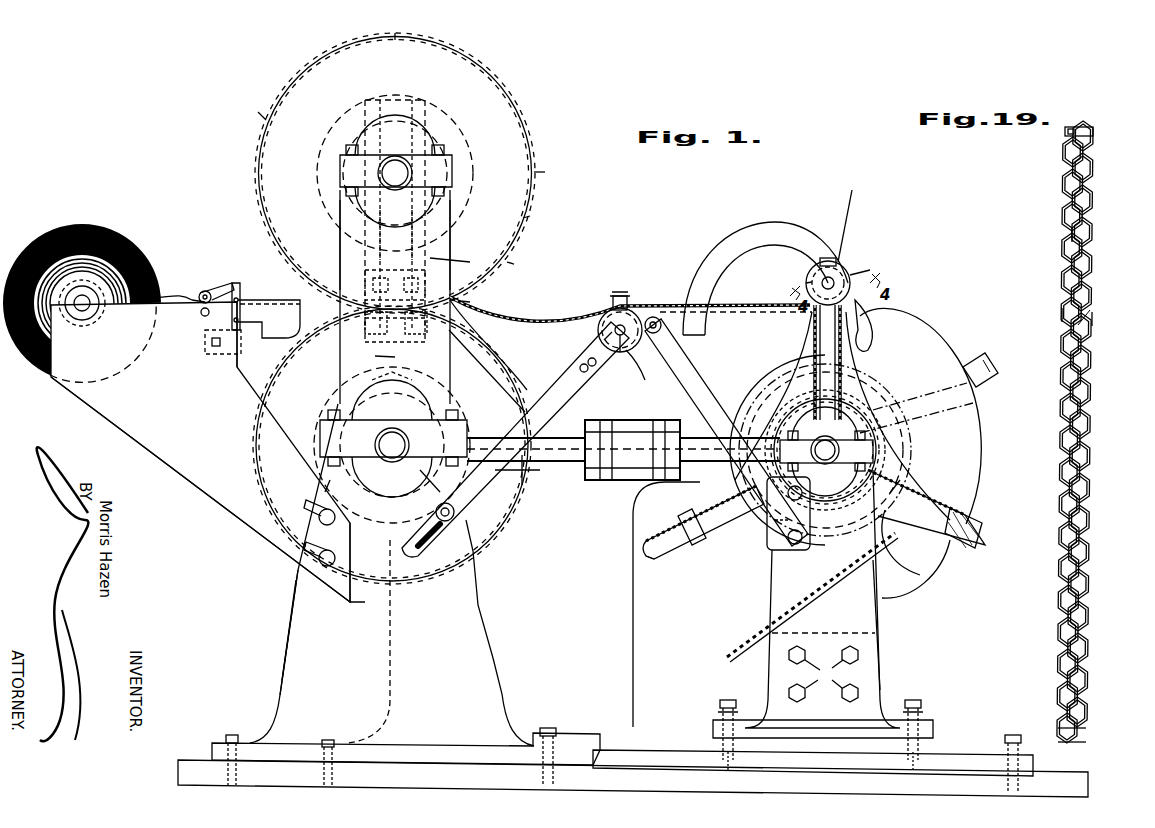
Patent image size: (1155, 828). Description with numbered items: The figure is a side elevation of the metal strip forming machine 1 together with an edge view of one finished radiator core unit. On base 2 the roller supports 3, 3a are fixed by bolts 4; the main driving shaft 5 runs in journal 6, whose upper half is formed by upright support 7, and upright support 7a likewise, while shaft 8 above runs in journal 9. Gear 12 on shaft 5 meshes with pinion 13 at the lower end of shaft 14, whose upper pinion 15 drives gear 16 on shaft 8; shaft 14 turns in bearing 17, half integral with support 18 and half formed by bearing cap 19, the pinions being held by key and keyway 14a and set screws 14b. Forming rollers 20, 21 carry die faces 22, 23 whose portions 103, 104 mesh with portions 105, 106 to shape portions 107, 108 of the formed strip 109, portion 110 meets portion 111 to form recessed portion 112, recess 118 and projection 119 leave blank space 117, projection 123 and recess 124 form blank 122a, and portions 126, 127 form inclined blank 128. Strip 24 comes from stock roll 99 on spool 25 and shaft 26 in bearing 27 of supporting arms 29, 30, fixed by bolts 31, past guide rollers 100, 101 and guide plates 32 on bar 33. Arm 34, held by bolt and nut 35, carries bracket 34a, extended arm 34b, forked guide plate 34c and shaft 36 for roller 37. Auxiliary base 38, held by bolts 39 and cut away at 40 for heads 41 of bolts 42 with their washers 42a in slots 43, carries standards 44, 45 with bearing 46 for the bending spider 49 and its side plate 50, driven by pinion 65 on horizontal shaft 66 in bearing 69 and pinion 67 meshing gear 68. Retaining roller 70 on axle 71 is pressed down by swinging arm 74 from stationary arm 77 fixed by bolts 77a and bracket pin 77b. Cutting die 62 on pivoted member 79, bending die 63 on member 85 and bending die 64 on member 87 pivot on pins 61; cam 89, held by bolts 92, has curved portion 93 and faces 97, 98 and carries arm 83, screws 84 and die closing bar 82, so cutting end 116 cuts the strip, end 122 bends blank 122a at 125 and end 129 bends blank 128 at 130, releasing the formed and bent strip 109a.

In FIG. 1, the metal strip forming machine 1 is at (296, 584).
In FIG. 1, the base 2 is at (633, 778).
In FIG. 1, the roller support 3 is at (392, 423).
In FIG. 1, the roller support 3a is at (290, 636).
In FIG. 1, the bolts 4 is at (232, 735).
In FIG. 1, the main driving shaft 5 is at (392, 445).
In FIG. 1, the journal 6 is at (398, 460).
In FIG. 1, the upright support 7 is at (441, 245).
In FIG. 1, the upright support 7a is at (472, 299).
In FIG. 1, the shaft 8 is at (395, 173).
In FIG. 1, the journal 9 is at (395, 154).
In FIG. 1, the gear 12 is at (392, 510).
In FIG. 1, the pinion 13 is at (392, 380).
In FIG. 1, the shaft 14 is at (353, 245).
In FIG. 1, the key and keyway 14a is at (371, 361).
In FIG. 1, the set screws 14b is at (459, 256).
In FIG. 1, the pinion 15 is at (396, 235).
In FIG. 1, the gear 16 is at (342, 134).
In FIG. 1, the bearing 17 is at (363, 323).
In FIG. 1, the support 18 is at (640, 604).
In FIG. 1, the bearing cap 19 is at (428, 323).
In FIG. 1, the strip forming roller 20 is at (392, 445).
In FIG. 1, the strip forming roller 21 is at (429, 173).
In FIG. 1, the die face 22 is at (492, 530).
In FIG. 1, the die face 23 is at (540, 176).
In FIG. 1, the strip 24 is at (180, 296).
In FIG. 1, the spool 25 is at (80, 296).
In FIG. 1, the shaft 26 is at (95, 312).
In FIG. 1, the bearing 27 is at (76, 316).
In FIG. 1, the supporting arm 29 is at (200, 452).
In FIG. 1, the supporting arm 30 is at (812, 597).
In FIG. 1, the bolts 31 is at (322, 533).
In FIG. 1, the adjustable guide plates 32 is at (269, 319).
In FIG. 1, the bar 33 is at (210, 345).
In FIG. 1, the arm 34 is at (556, 390).
In FIG. 1, the bracket 34a is at (610, 312).
In FIG. 1, the extended arm 34b is at (630, 296).
In FIG. 1, the forked guide plate 34c is at (622, 352).
In FIG. 1, the bolt and nut 35 is at (445, 521).
In FIG. 1, the shaft 36 is at (643, 365).
In FIG. 1, the roller 37 is at (604, 332).
In FIG. 1, the auxiliary base 38 is at (406, 749).
In FIG. 1, the bolts 39 is at (548, 728).
In FIG. 1, the cut away 40 is at (640, 764).
In FIG. 1, the heads 41 is at (878, 760).
In FIG. 1, the bolts 42 is at (824, 718).
In FIG. 1, the washer 42a is at (718, 712).
In FIG. 1, the slots 43 is at (703, 736).
In FIG. 1, the standard 44 is at (822, 599).
In FIG. 1, the standard 45 is at (880, 614).
In FIG. 1, the bearing 46 is at (845, 422).
In FIG. 1, the bending spider 49 is at (901, 495).
In FIG. 1, the side plate 50 is at (860, 450).
In FIG. 1, the pivot pins 61 is at (868, 272).
In FIG. 1, the cutting die 62 is at (690, 554).
In FIG. 1, the bending die 63 is at (988, 536).
In FIG. 1, the bending die 64 is at (820, 260).
In FIG. 1, the pinion 65 is at (420, 492).
In FIG. 1, the horizontal shaft 66 is at (623, 449).
In FIG. 1, the pinion 67 is at (768, 426).
In FIG. 1, the gear 68 is at (903, 448).
In FIG. 1, the bearing 69 is at (622, 424).
In FIG. 1, the strip retaining roller 70 is at (845, 275).
In FIG. 1, the axle 71 is at (806, 282).
In FIG. 1, the swinging arm 74 is at (765, 278).
In FIG. 1, the stationary arm 77 is at (726, 431).
In FIG. 1, the bolts 77a is at (804, 537).
In FIG. 1, the bracket pin 77b is at (774, 523).
In FIG. 1, the pivoted member 79 is at (650, 562).
In FIG. 1, the die closing bar 82 is at (998, 368).
In FIG. 1, the arm 83 is at (985, 390).
In FIG. 1, the screws 84 is at (826, 428).
In FIG. 1, the pivoted member 85 is at (958, 512).
In FIG. 1, the pivoted member 87 is at (848, 217).
In FIG. 1, the cam 89 is at (842, 416).
In FIG. 1, the bolts 92 is at (823, 674).
In FIG. 1, the inwardly curved portion 93 is at (870, 332).
In FIG. 1, the face 97 is at (760, 383).
In FIG. 1, the face 98 is at (935, 355).
In FIG. 1, the stock roll 99 is at (102, 232).
In FIG. 1, the guide roller 100 is at (212, 290).
In FIG. 1, the guide roller 101 is at (200, 316).
In FIG. 1, the portion 103 is at (258, 466).
In FIG. 1, the portion 104 is at (527, 500).
In FIG. 1, the portion 105 is at (266, 120).
In FIG. 1, the portion 106 is at (513, 100).
In FIG. 1, the formed strip 109 is at (724, 306).
In FIG. 1, the portion 110 is at (498, 340).
In FIG. 1, the portion 111 is at (512, 266).
In FIG. 1, the cutting end 116 is at (708, 544).
In FIG. 1, the blank space 117 is at (554, 334).
In FIG. 1, the recess 118 is at (528, 395).
In FIG. 1, the projection 119 is at (530, 218).
In FIG. 1, the end 122 is at (862, 312).
In FIG. 1, the projection 123 is at (395, 583).
In FIG. 1, the recess 124 is at (395, 38).
In FIG. 1, the portion 126 is at (288, 360).
In FIG. 1, the portion 127 is at (300, 282).
In FIG. 1, the end 129 is at (926, 550).
In FIG. 19, the blank 122a is at (1090, 130).
In FIG. 19, the bend 125 is at (1065, 133).
In FIG. 19, the formed and bent strip 109a is at (1066, 235).
In FIG. 19, the portion 107 is at (1062, 317).
In FIG. 19, the portion 108 is at (1094, 320).
In FIG. 19, the portion 112 is at (1090, 318).
In FIG. 19, the inclined blank 128 is at (1088, 732).
In FIG. 19, the bend 130 is at (1088, 742).